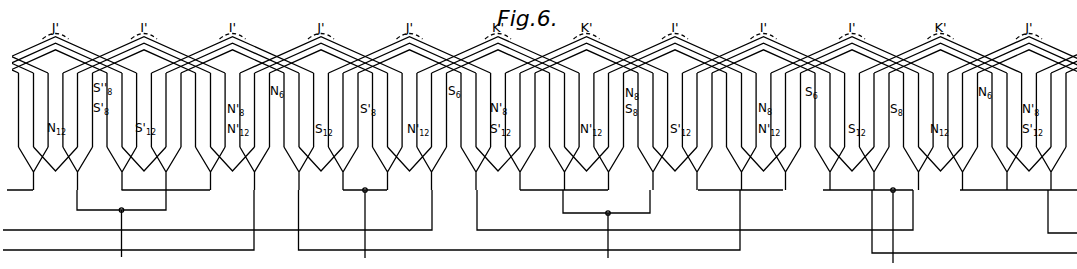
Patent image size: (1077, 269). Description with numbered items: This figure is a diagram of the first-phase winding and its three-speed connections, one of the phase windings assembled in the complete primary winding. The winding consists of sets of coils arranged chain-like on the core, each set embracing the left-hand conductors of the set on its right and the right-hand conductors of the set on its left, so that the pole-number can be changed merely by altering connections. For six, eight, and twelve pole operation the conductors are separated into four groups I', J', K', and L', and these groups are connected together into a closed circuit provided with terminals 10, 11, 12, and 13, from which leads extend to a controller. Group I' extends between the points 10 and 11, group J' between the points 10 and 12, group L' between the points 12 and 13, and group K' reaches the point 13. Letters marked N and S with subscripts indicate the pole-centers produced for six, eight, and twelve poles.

The terminal 10 is at (130, 232).
The terminal 11 is at (897, 220).
The terminal 12 is at (374, 223).
The terminal 13 is at (618, 228).